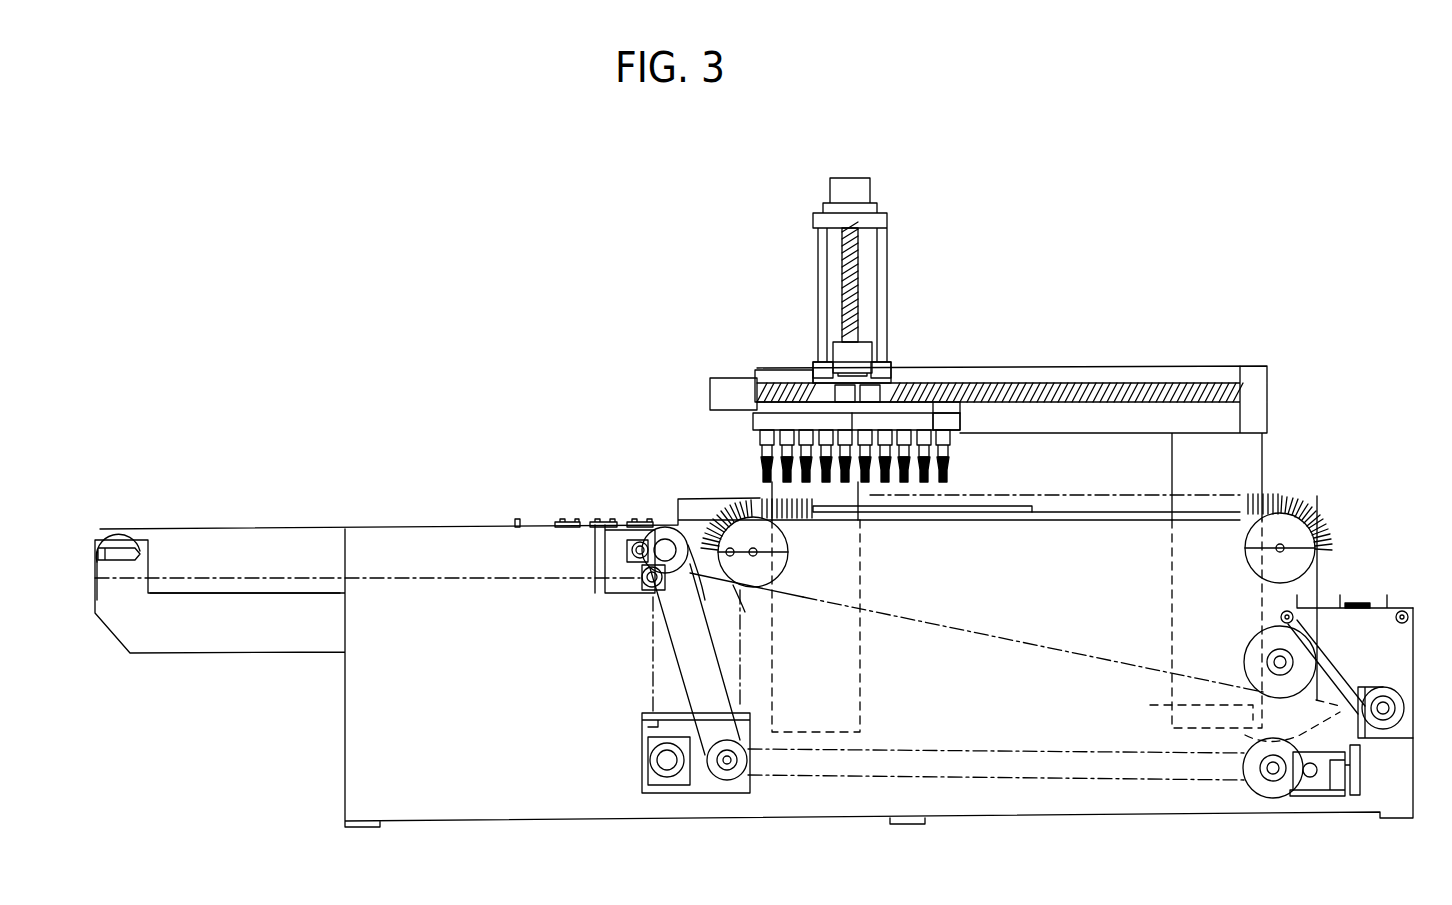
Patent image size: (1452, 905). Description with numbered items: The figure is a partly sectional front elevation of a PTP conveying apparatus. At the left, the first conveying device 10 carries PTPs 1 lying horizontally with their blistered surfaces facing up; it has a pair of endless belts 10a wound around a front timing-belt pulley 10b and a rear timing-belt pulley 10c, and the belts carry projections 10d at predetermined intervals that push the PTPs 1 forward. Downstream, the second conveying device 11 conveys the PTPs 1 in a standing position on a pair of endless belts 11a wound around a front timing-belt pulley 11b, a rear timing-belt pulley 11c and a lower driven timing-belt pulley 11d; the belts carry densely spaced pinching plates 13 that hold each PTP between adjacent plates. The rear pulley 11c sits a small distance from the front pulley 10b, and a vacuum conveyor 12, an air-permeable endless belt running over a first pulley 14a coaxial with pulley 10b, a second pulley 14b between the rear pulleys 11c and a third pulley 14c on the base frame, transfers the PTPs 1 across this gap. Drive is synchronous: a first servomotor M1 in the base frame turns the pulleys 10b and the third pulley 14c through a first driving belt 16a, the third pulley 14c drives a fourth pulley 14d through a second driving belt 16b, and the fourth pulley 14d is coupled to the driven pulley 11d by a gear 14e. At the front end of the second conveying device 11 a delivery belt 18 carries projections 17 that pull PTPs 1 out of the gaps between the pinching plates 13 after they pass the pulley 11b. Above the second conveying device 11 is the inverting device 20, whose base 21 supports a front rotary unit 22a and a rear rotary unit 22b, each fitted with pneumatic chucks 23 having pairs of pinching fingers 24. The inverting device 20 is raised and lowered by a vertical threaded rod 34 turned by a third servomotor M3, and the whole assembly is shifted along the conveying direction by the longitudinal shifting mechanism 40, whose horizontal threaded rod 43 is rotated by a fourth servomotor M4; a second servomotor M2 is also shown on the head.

The PTP 1 is at (528, 520).
The first conveying device 10 is at (313, 492).
The endless belts 10a is at (272, 580).
The timing-belt pulley 10b is at (660, 520).
The timing-belt pulley 10c is at (125, 580).
The projections 10d is at (515, 518).
The second conveying device 11 is at (1030, 500).
The endless belts 11a is at (889, 620).
The timing-belt pulley 11b is at (1245, 547).
The timing-belt pulley 11c is at (788, 549).
The driven timing-belt pulley 11d is at (1256, 683).
The vacuum conveyor 12 is at (775, 705).
The pinching plates 13 is at (730, 520).
The first pulley 14a is at (745, 583).
The second pulley 14b is at (738, 560).
The third pulley 14c is at (730, 782).
The fourth pulley 14d is at (1272, 782).
The gear 14e is at (1170, 705).
The first driving belt 16a is at (651, 657).
The second driving belt 16b is at (970, 750).
The projections 17 is at (1305, 608).
The delivery belt 18 is at (1353, 610).
The inverting device 20 is at (766, 356).
The base 21 is at (793, 408).
The front rotary unit 22a is at (950, 410).
The rear rotary unit 22b is at (762, 422).
The pneumatic chucks 23 is at (965, 440).
The pinching fingers 24 is at (955, 462).
The vertical threaded rod 34 is at (860, 238).
The longitudinal shifting mechanism 40 is at (1163, 358).
The horizontal threaded rod 43 is at (1027, 383).
The first servomotor M1 is at (642, 763).
The second servomotor M2 is at (872, 352).
The third servomotor M3 is at (870, 188).
The fourth servomotor M4 is at (735, 380).